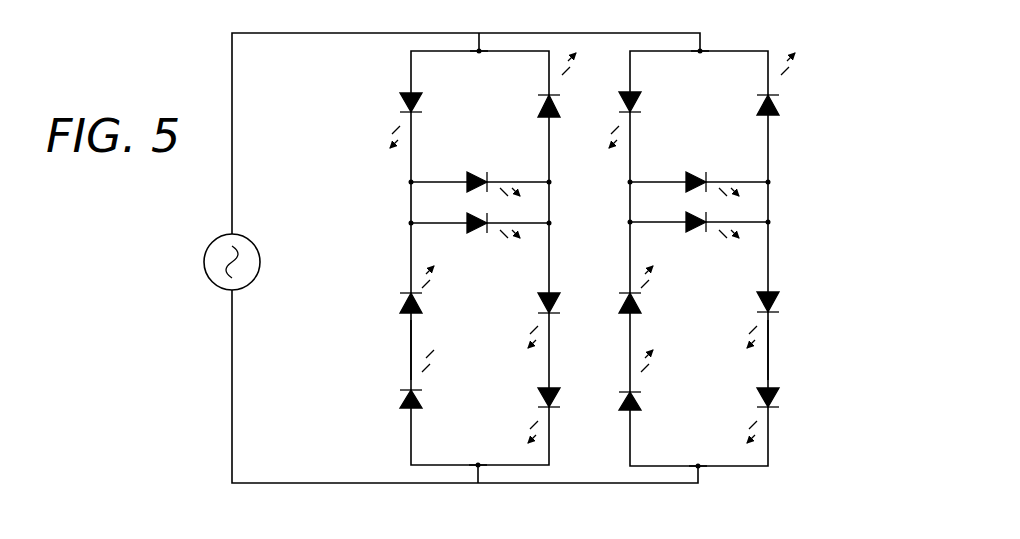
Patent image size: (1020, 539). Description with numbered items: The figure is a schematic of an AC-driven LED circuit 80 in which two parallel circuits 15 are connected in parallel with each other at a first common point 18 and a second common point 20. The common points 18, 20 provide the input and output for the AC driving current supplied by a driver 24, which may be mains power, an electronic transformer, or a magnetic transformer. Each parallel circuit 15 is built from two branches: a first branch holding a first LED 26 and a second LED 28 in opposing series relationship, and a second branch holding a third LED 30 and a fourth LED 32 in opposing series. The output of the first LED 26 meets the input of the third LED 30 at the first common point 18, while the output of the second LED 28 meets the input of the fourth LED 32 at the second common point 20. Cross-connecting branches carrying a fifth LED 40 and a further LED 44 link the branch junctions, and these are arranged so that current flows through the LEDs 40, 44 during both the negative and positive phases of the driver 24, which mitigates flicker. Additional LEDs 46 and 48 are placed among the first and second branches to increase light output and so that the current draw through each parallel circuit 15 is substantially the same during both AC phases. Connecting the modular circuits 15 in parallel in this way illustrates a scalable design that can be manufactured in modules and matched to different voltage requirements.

The parallel circuit 15 is at (402, 360).
The first common point 18 is at (479, 53).
The second common point 20 is at (478, 465).
The driver 24 is at (204, 252).
The first LED 26 is at (540, 107).
The second LED 28 is at (538, 299).
The third LED 30 is at (406, 95).
The fourth LED 32 is at (402, 312).
The fifth LED 40 is at (471, 180).
The LED 44 is at (473, 229).
The additional LED 46 is at (538, 398).
The additional LED 48 is at (401, 396).
The AC-driven LED circuit 80 is at (408, 500).